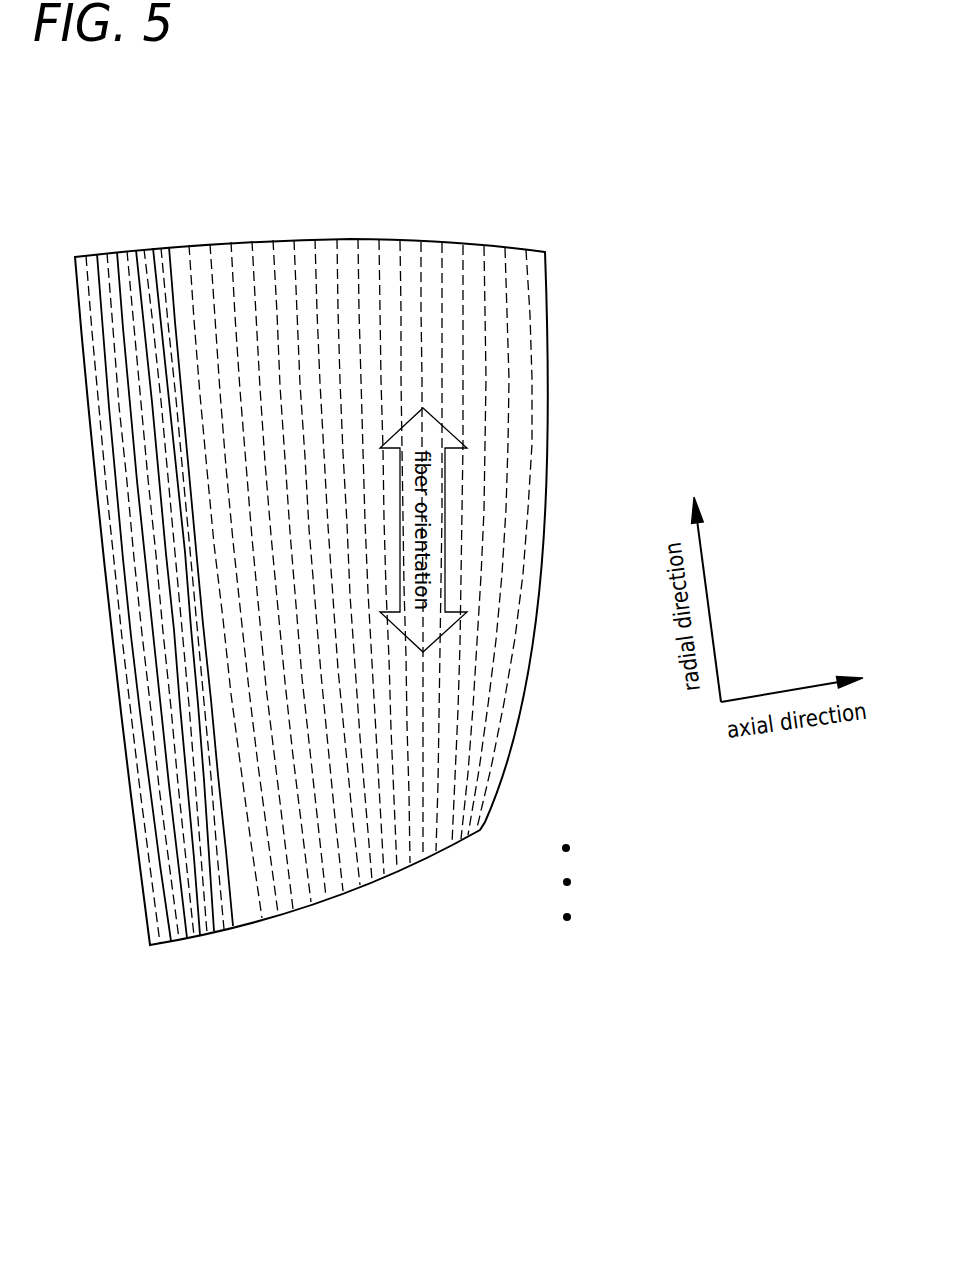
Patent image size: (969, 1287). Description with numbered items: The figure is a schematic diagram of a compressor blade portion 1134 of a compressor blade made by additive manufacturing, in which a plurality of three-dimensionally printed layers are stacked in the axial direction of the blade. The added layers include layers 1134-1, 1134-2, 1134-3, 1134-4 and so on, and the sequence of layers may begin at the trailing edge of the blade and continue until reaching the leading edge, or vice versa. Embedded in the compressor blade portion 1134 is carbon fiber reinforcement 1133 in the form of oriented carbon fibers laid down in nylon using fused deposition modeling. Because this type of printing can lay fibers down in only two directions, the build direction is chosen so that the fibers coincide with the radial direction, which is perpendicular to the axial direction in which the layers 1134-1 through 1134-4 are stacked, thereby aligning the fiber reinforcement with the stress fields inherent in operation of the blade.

The carbon fiber reinforcement 1133 is at (318, 275).
The compressor blade portion 1134 is at (556, 284).
The layer 1134-1 is at (157, 944).
The layer 1134-2 is at (183, 939).
The layer 1134-3 is at (203, 934).
The layer 1134-4 is at (223, 929).